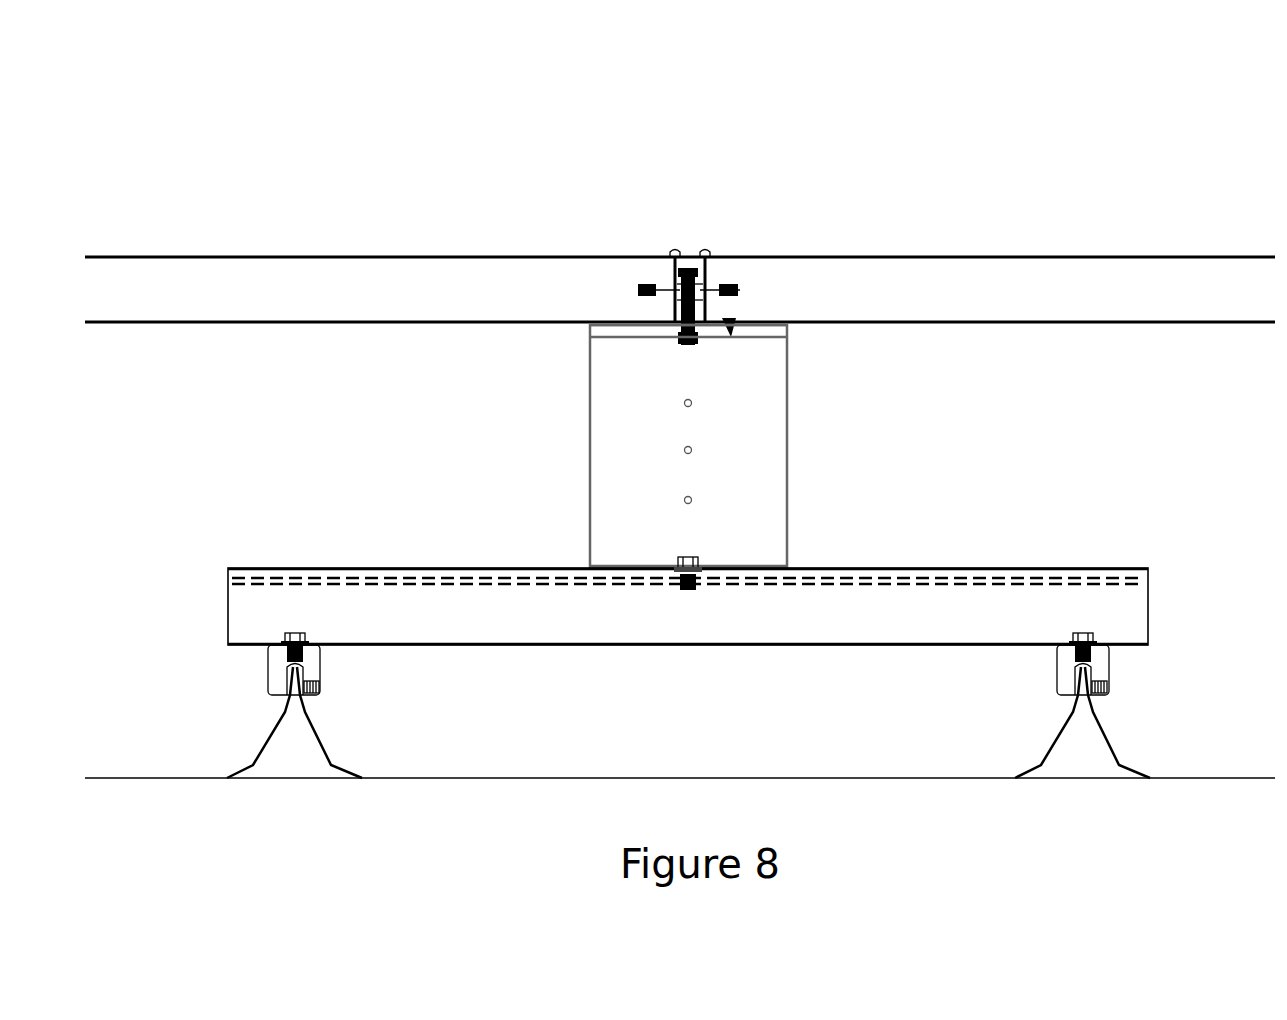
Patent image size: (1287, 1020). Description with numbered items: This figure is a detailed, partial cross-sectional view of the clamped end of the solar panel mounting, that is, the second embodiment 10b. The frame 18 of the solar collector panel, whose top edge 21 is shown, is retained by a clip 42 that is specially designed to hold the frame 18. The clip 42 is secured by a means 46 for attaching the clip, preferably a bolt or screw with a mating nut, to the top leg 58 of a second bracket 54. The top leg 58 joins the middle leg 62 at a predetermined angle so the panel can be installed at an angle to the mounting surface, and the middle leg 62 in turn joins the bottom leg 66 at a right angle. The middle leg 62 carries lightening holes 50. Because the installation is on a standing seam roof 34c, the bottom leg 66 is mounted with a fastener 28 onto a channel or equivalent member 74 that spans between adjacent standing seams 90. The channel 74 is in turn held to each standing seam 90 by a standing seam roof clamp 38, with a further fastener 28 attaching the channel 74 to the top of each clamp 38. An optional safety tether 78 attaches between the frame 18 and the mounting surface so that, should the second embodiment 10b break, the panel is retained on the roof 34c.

The second embodiment 10b is at (686, 138).
The top edge of frame 21 is at (247, 257).
The frame for solar collector panel 18 is at (470, 263).
The clip 42 is at (702, 257).
The safety tether 78 is at (640, 291).
The means for attaching clip 46 is at (738, 290).
The top leg of second bracket 58 is at (590, 331).
The second bracket 54 is at (832, 390).
The middle leg of second bracket 62 is at (757, 445).
The lightening hole 50 is at (685, 405).
The bottom leg of second bracket 66 is at (602, 567).
The bar, channel or equivalent member 74 is at (1128, 608).
The fastener 28 is at (688, 556).
The standing seam roof clamp 38 is at (317, 668).
The standing seam 90 is at (305, 755).
The standing seam roof 34c is at (668, 778).